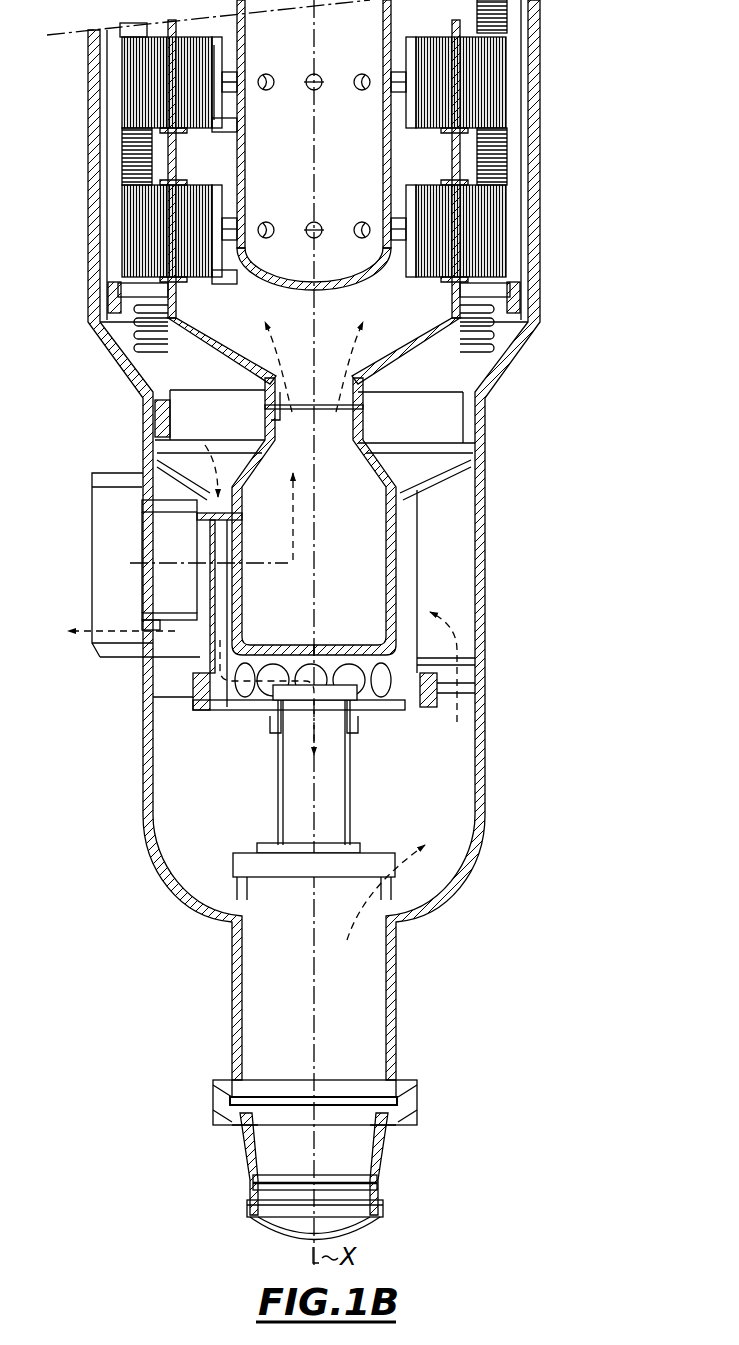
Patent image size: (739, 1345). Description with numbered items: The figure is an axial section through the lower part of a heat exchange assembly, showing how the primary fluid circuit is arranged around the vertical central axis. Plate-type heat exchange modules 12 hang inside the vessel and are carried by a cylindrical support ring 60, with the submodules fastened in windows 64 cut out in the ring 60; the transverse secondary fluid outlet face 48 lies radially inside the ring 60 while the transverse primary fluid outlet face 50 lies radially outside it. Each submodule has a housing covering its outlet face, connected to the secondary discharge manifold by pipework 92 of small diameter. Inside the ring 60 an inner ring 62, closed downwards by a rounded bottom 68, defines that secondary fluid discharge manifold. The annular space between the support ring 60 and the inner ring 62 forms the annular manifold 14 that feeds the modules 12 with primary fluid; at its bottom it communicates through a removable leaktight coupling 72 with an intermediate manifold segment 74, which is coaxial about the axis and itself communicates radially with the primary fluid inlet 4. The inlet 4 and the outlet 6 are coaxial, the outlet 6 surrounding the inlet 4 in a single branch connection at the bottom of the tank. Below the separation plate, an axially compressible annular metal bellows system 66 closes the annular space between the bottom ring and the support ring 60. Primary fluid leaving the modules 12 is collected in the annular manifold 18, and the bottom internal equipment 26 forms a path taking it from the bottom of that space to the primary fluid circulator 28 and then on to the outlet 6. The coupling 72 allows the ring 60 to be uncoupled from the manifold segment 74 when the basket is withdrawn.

The inlet 4 is at (170, 514).
The outlet 6 is at (127, 513).
The heat exchange module 12 is at (480, 65).
The annular manifold 14 is at (452, 152).
The annular manifold 18 is at (528, 165).
The bottom internal equipment 26 is at (385, 795).
The primary fluid circulator 28 is at (362, 1005).
The transverse secondary fluid outlet face 48 is at (120, 96).
The transverse primary fluid outlet face 50 is at (215, 56).
The ring 60 is at (166, 157).
The inner ring 62 is at (243, 146).
The window 64 is at (178, 186).
The annular metal bellows system 66 is at (170, 358).
The rounded bottom 68 is at (329, 282).
The removable leaktight coupling 72 is at (366, 406).
The intermediate manifold segment 74 is at (390, 545).
The pipework 92 is at (313, 221).